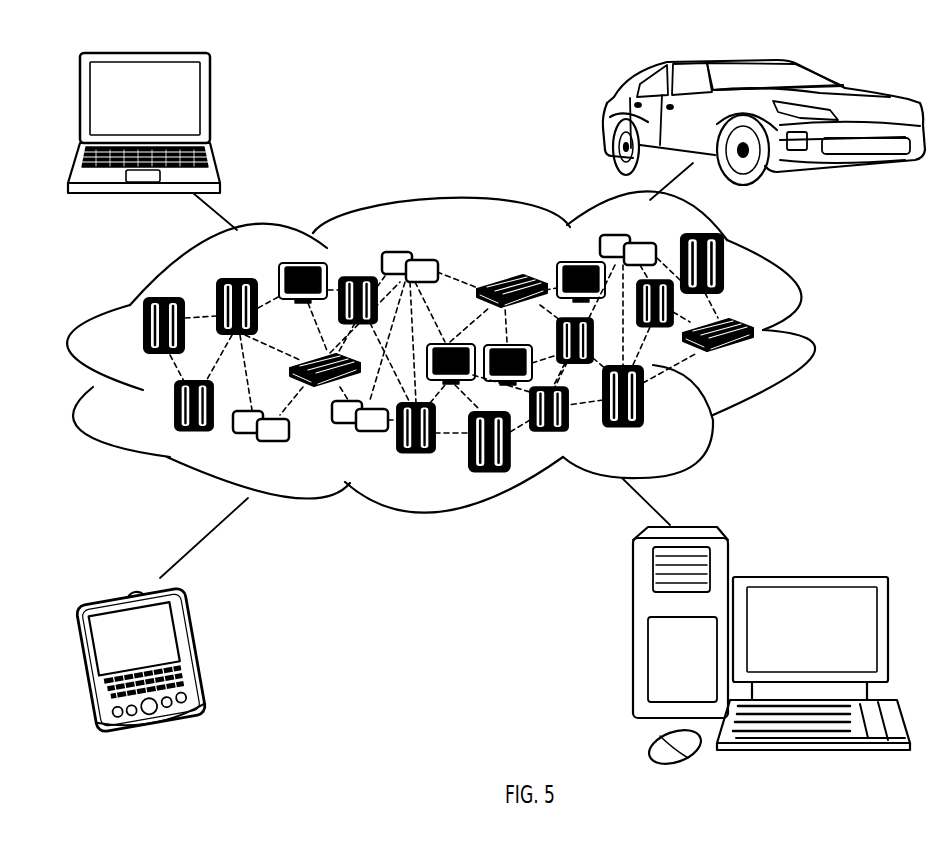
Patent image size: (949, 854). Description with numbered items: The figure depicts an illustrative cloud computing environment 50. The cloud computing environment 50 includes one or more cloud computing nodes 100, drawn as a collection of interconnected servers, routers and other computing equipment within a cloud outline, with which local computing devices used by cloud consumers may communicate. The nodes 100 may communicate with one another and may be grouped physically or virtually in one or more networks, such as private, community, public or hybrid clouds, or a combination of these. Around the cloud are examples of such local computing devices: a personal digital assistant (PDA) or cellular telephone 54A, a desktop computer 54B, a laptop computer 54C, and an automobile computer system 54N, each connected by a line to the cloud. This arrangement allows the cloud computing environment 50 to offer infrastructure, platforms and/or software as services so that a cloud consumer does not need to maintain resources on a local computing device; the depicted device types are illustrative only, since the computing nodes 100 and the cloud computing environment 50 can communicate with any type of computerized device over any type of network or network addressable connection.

The laptop computer 54C is at (210, 108).
The automobile computer system 54N is at (608, 116).
The personal digital assistant (PDA) or cellular telephone 54A is at (197, 648).
The desktop computer 54B is at (808, 575).
The cloud computing environment 50 is at (808, 332).
The cloud computing nodes 100 is at (760, 359).